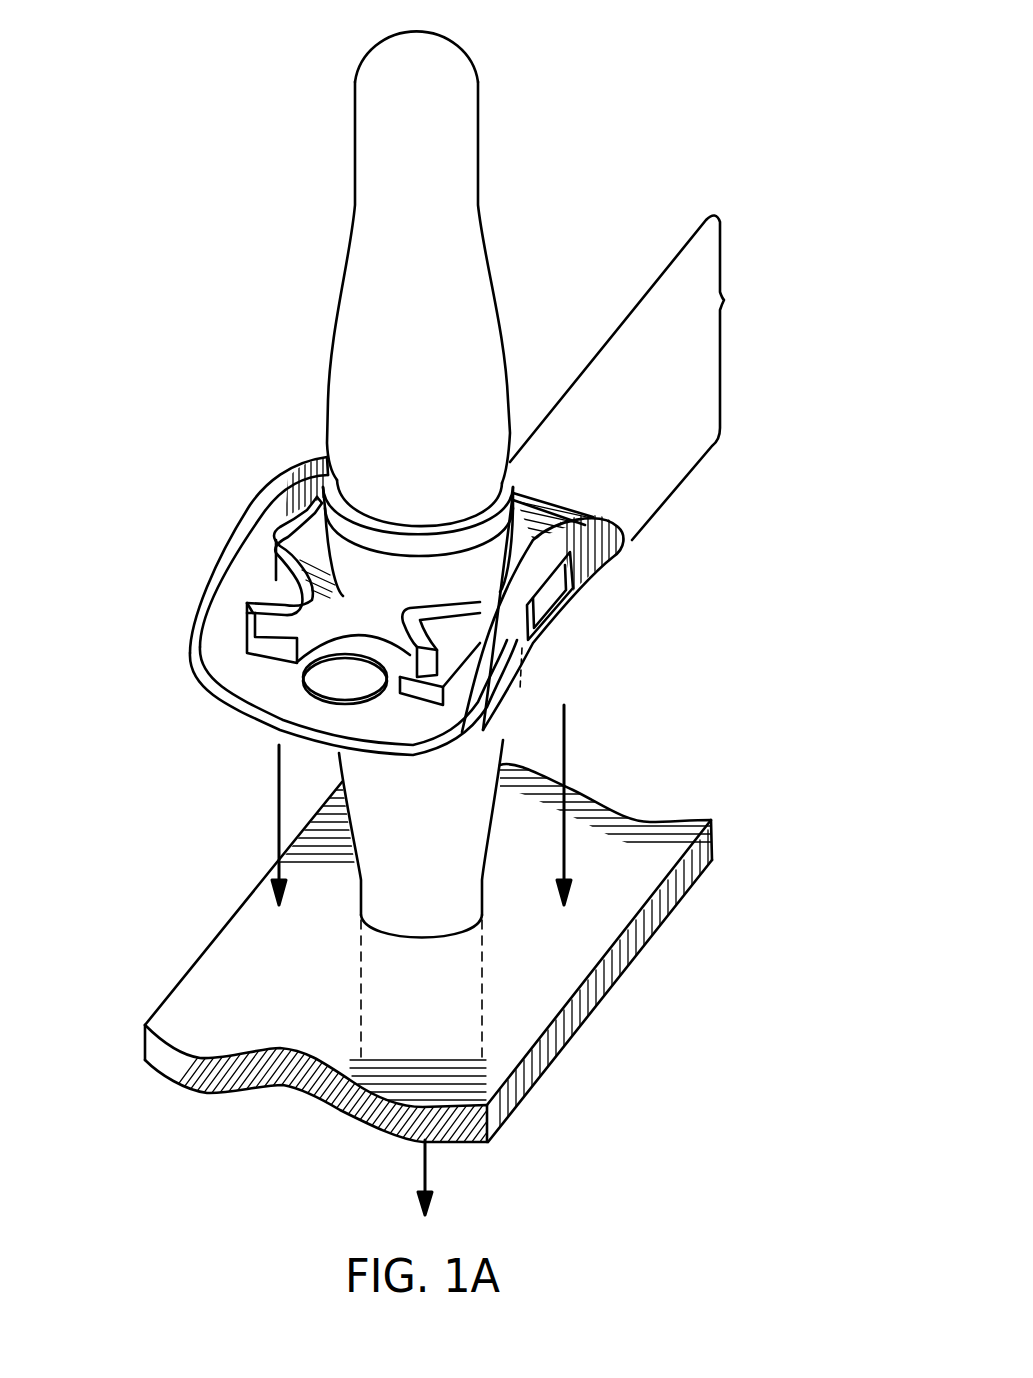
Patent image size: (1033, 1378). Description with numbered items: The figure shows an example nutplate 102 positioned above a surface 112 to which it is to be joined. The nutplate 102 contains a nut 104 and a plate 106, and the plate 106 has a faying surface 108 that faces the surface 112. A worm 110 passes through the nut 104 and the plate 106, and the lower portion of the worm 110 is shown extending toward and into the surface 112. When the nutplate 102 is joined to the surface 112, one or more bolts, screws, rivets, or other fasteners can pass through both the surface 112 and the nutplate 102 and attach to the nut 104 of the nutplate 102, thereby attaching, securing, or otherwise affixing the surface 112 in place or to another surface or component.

The nutplate 102 is at (724, 300).
The nut 104 is at (340, 555).
The plate 106 is at (600, 560).
The faying surface 108 is at (530, 683).
The worm 110 is at (452, 163).
The surface 112 is at (238, 948).